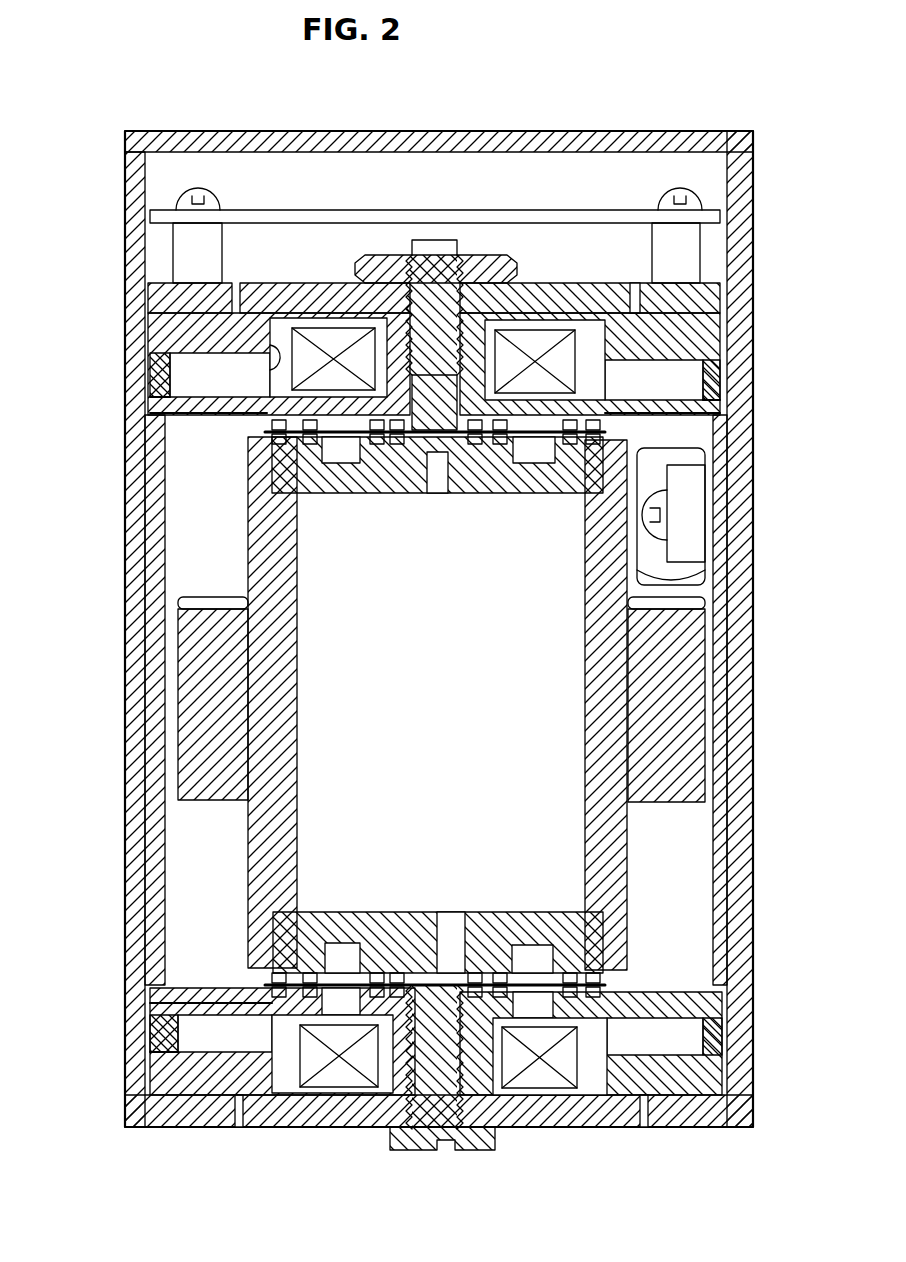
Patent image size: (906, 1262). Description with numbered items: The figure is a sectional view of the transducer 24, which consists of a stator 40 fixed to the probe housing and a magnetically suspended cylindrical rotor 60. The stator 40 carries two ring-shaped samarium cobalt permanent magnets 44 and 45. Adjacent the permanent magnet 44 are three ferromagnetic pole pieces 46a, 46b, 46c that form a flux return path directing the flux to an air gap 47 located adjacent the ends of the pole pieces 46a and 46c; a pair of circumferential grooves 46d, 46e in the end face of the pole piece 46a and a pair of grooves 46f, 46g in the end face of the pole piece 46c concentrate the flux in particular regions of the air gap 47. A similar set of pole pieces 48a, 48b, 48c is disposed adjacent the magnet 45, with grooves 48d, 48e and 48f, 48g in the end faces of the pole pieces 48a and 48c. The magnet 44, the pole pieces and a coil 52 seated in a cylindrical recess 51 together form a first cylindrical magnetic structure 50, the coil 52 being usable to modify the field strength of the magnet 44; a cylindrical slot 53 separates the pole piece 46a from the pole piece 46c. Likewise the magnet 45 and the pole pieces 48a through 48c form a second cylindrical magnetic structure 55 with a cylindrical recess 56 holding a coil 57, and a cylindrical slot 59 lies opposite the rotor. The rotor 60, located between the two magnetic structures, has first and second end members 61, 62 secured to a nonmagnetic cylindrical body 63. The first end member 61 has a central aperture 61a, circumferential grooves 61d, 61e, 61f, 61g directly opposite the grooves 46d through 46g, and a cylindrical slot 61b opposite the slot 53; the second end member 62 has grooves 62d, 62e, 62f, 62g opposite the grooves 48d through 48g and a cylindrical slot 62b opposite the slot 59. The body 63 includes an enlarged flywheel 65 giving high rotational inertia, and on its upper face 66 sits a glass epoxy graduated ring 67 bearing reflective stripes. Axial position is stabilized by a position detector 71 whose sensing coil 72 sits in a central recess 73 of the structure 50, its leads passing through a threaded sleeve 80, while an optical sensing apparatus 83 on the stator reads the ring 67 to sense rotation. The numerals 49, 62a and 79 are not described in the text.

The transducer 24 is at (108, 282).
The stator 40 is at (140, 690).
The permanent magnet 44 is at (170, 420).
The permanent magnet 45 is at (195, 1030).
The pole piece 46a is at (182, 355).
The pole piece 46b is at (185, 380).
The pole piece 46c is at (148, 440).
The circumferential groove 46d is at (500, 442).
The circumferential groove 46e is at (478, 440).
The circumferential groove 46f is at (318, 400).
The circumferential groove 46g is at (270, 428).
The air gap 47 is at (305, 435).
The pole piece 48a is at (180, 1070).
The pole piece 48b is at (170, 1040).
The pole piece 48c is at (150, 990).
The groove 48d is at (590, 978).
The groove 48e is at (470, 978).
The groove 48f is at (372, 980).
The groove 48g is at (272, 980).
The lead 49 is at (275, 970).
The first cylindrical magnetic structure 50 is at (185, 330).
The cylindrical recess 51 is at (272, 360).
The coil 52 is at (312, 332).
The cylindrical slot 53 is at (437, 359).
The second cylindrical magnetic structure 55 is at (134, 1106).
The cylindrical recess 56 is at (257, 1128).
The coil 57 is at (340, 1078).
The cylindrical slot 59 is at (555, 1010).
The rotor 60 is at (620, 858).
The first end member 61 is at (320, 490).
The central aperture 61a is at (450, 493).
The cylindrical slot 61b is at (525, 465).
The circumferential groove 61d is at (470, 442).
The circumferential groove 61e is at (447, 445).
The circumferential groove 61f is at (372, 445).
The circumferential groove 61g is at (340, 438).
The second end member 62 is at (528, 912).
The central opening 62a is at (452, 955).
The cylindrical slot 62b is at (520, 955).
The circumferential groove 62d is at (568, 975).
The circumferential groove 62e is at (498, 975).
The circumferential groove 62f is at (395, 975).
The circumferential groove 62g is at (305, 978).
The cylindrical body 63 is at (268, 830).
The flywheel 65 is at (185, 742).
The upper face 66 is at (680, 615).
The graduated ring 67 is at (700, 604).
The position detector 71 is at (505, 377).
The sensing coil 72 is at (505, 345).
The central recess 73 is at (532, 422).
The cover plate 79 is at (462, 202).
The threaded sleeve 80 is at (458, 258).
The optical sensing apparatus 83 is at (688, 526).